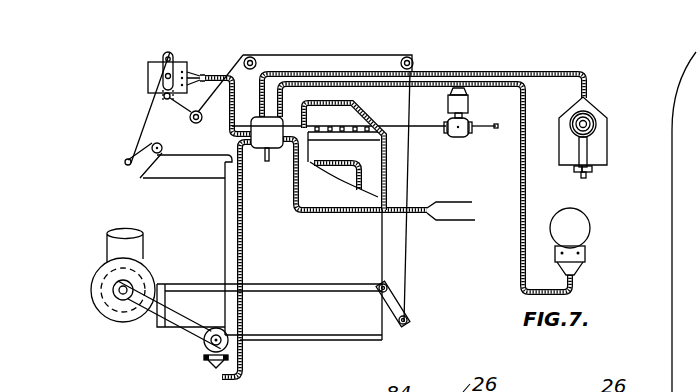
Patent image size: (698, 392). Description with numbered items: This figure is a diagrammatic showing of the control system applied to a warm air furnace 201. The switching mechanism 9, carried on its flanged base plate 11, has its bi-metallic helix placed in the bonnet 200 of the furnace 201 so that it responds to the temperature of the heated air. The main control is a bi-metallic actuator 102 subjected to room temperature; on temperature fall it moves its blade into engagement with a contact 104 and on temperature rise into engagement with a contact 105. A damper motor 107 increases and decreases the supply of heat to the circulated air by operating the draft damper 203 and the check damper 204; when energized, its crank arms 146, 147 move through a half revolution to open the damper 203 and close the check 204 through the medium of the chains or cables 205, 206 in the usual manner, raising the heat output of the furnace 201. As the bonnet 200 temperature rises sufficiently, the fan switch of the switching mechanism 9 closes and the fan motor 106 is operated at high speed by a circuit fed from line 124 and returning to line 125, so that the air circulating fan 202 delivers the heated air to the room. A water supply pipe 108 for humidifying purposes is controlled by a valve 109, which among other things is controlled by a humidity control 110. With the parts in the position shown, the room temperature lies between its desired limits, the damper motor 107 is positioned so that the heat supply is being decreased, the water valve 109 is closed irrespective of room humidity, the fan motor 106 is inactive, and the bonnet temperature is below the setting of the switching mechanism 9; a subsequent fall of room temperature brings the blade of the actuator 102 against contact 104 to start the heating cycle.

The crank arm 146 is at (171, 55).
The damper motor 107 is at (148, 73).
The chain or cable 206 is at (148, 104).
The crank arm 147 is at (167, 99).
The check damper 204 is at (126, 167).
The switching mechanism 9 is at (268, 160).
The bonnet 200 is at (342, 117).
The warm air furnace 201 is at (269, 251).
The chain or cable 205 is at (407, 283).
The draft damper 203 is at (407, 326).
The air circulating fan 202 is at (143, 281).
The fan motor 106 is at (203, 348).
The valve 109 is at (468, 105).
The water supply pipe 108 is at (490, 133).
The line 124 is at (442, 202).
The line 125 is at (440, 224).
The bi-metallic actuator 102 is at (595, 118).
The contact 104 is at (570, 170).
The contact 105 is at (595, 170).
The humidity control 110 is at (580, 228).
The base plate 11 is at (679, 160).